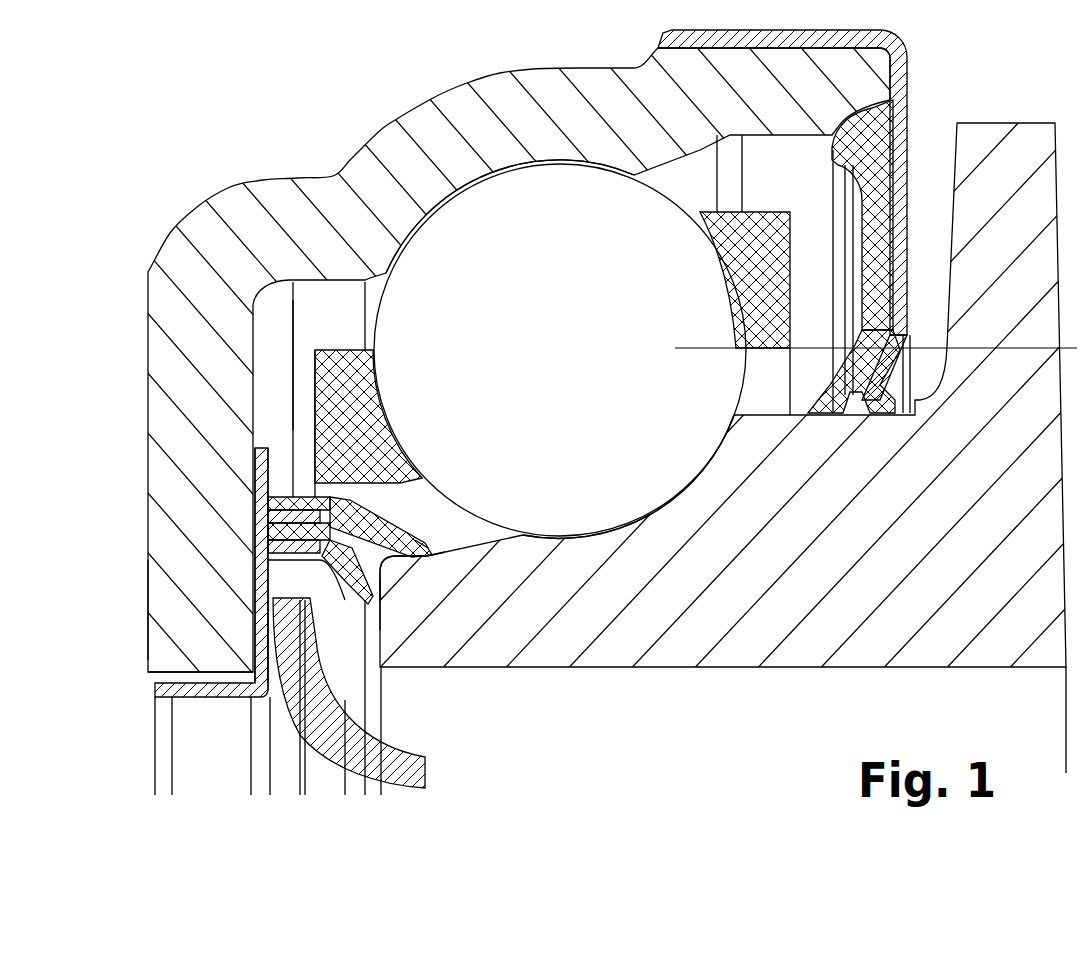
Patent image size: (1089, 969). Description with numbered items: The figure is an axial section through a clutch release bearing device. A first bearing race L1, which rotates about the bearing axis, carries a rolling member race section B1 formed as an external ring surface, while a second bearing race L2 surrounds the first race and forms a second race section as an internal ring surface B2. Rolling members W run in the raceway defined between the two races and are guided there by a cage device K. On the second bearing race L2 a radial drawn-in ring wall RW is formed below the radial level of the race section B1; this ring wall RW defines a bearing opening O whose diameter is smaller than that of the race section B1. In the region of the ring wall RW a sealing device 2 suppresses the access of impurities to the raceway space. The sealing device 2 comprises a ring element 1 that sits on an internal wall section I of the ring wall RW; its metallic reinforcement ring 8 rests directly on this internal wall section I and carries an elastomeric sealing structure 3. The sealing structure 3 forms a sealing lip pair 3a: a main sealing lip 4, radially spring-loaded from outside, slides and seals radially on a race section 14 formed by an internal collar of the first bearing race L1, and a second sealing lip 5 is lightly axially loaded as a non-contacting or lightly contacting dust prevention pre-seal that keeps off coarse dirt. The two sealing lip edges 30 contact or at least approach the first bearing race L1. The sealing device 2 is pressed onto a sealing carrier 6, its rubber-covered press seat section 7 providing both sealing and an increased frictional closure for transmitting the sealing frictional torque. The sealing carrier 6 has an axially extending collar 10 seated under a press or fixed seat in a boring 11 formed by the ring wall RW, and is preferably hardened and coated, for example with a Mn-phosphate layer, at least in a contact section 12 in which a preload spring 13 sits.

The first bearing race L1 is at (745, 648).
The second bearing race L2 is at (456, 116).
The rolling members W is at (462, 296).
The cage device K is at (772, 212).
The rolling member race section B1 is at (630, 527).
The internal ring surface B2 is at (470, 178).
The internal wall section I is at (270, 434).
The ring element 1 is at (321, 475).
The sealing device 2 is at (433, 535).
The sealing structure 3 is at (424, 493).
The sealing lip pair 3a is at (395, 517).
The sealing lip 4 is at (423, 527).
The sealing lip 5 is at (330, 575).
The sealing carrier 6 is at (272, 541).
The press seat section 7 is at (270, 518).
The metallic reinforcement ring 8 is at (264, 456).
The bearing opening O is at (149, 600).
The axially extending collar 10 is at (207, 700).
The boring 11 is at (162, 688).
The contact section 12 is at (272, 633).
The preload spring 13 is at (314, 727).
The race section 14 is at (430, 560).
The sealing lip edges 30 is at (422, 575).
The radial drawn-in ring wall RW is at (190, 610).